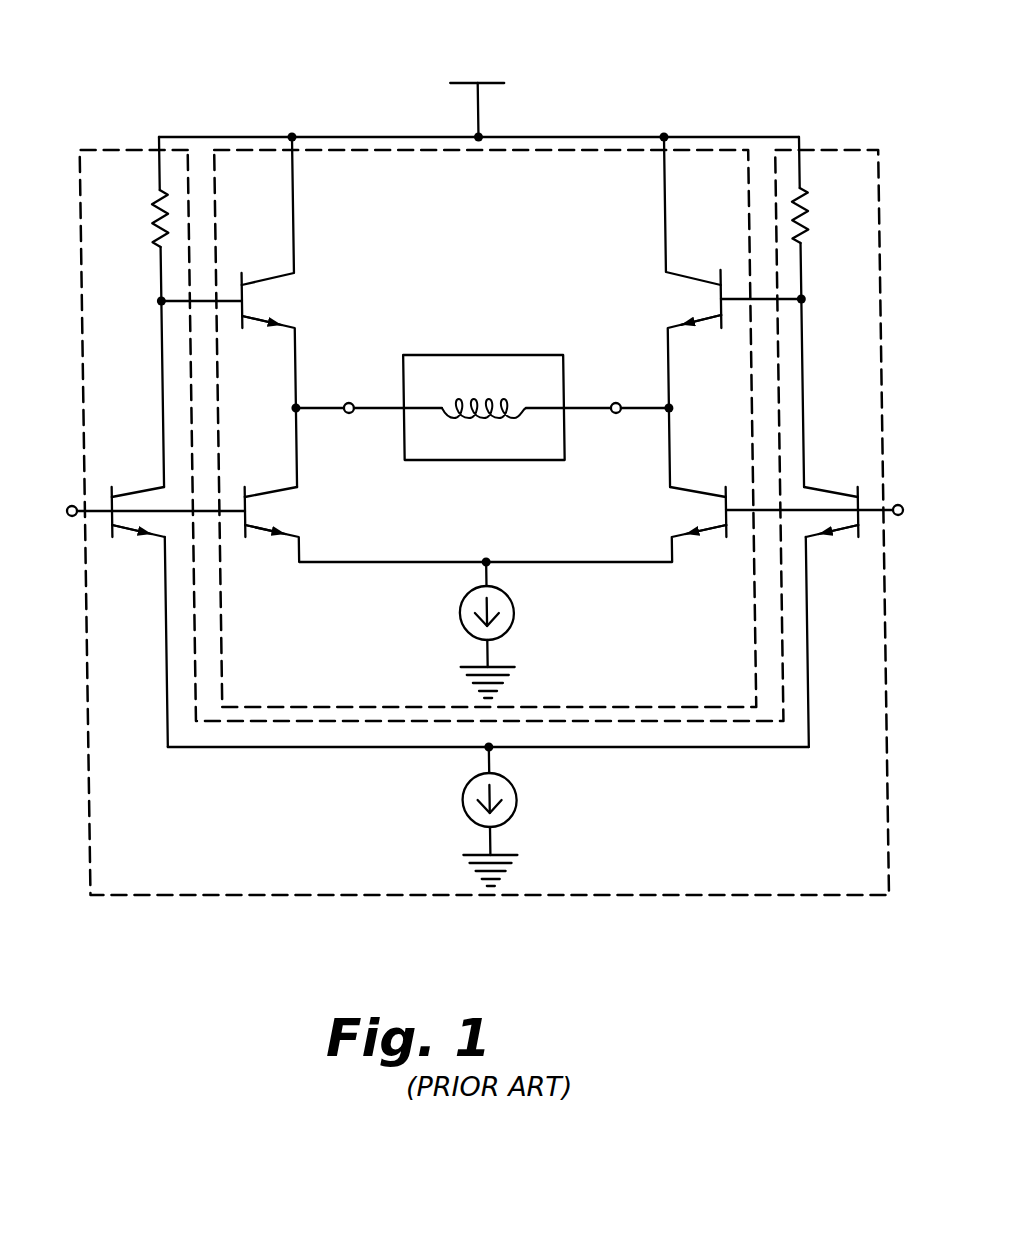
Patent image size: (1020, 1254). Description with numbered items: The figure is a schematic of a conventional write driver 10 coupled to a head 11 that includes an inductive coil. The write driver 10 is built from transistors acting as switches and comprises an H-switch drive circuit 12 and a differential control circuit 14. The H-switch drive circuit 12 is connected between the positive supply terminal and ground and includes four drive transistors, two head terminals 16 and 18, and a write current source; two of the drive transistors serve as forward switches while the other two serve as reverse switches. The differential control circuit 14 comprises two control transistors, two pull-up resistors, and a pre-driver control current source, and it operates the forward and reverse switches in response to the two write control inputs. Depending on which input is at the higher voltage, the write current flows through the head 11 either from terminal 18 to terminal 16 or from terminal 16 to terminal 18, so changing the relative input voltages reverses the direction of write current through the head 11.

The write driver 10 is at (731, 68).
The head 11 is at (478, 355).
The H-switch drive circuit 12 is at (516, 148).
The differential control circuit 14 is at (584, 895).
The head terminal 16 is at (347, 401).
The head terminal 18 is at (613, 401).